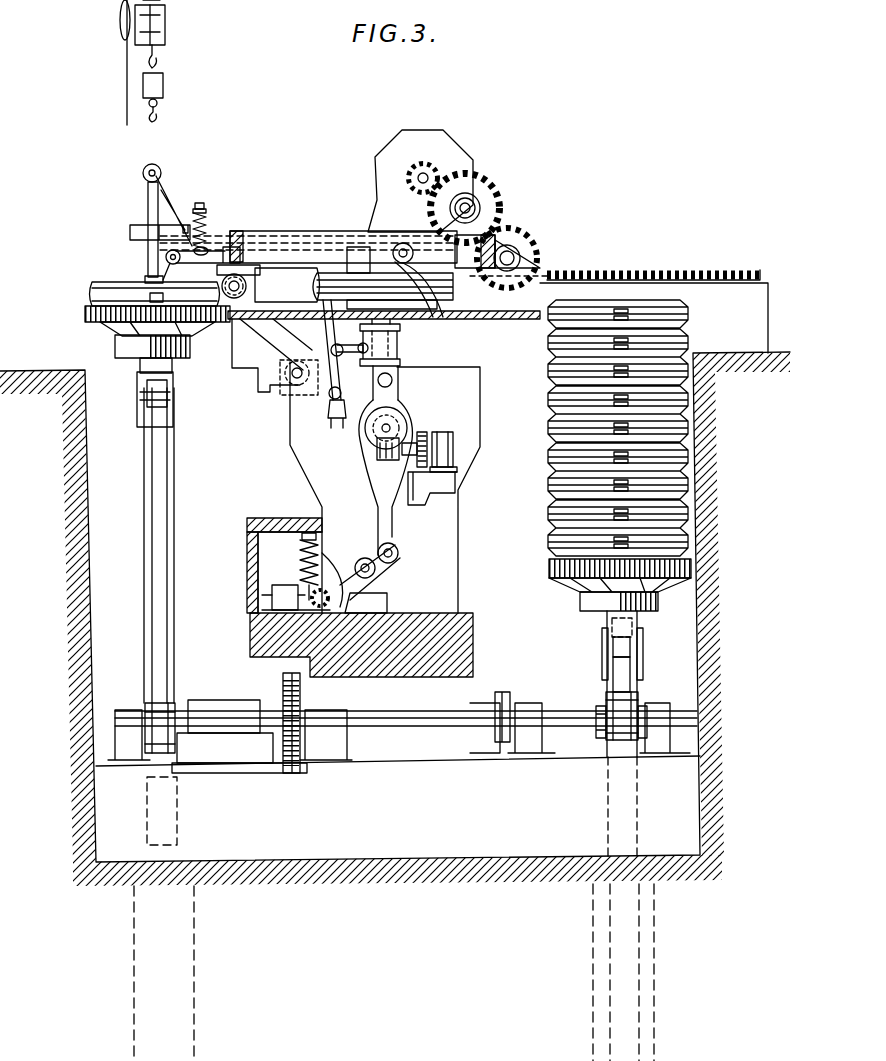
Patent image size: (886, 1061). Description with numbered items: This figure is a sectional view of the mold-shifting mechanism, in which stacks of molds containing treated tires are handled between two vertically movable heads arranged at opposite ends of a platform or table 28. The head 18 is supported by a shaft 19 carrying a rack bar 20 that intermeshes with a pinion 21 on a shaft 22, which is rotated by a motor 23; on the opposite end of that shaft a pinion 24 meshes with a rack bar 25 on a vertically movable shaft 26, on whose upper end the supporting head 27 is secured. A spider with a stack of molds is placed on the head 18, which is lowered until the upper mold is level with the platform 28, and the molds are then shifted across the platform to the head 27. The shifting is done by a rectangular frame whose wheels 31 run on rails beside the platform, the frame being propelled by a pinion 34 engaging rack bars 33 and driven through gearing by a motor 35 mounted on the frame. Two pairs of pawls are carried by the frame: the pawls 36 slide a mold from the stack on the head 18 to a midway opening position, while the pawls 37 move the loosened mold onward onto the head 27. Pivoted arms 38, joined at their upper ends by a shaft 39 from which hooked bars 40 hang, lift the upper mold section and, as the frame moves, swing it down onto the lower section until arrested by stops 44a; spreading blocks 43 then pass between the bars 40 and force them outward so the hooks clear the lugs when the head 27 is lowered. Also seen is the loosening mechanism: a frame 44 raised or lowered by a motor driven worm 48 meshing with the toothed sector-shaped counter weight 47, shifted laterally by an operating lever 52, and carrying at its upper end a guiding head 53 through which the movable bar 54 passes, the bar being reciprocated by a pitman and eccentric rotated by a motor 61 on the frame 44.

The vertically movable head 18 is at (560, 580).
The shaft 19 is at (608, 617).
The rack bar 20 is at (623, 684).
The pinion 21 is at (623, 708).
The shaft 22 is at (470, 726).
The motor 23 is at (233, 706).
The pinion 24 is at (160, 717).
The rack bar 25 is at (162, 626).
The vertically movable shaft 26 is at (173, 511).
The supporting head 27 is at (87, 326).
The platform 28 is at (286, 319).
The wheels 31 is at (254, 283).
The rack bars 33 is at (658, 271).
The pinion 34 is at (527, 257).
The motor 35 is at (453, 148).
The pawls 36 is at (414, 272).
The pawls 37 is at (160, 272).
The arms 38 is at (184, 199).
The shaft 39 is at (160, 166).
The bars 40 is at (150, 215).
The spreading blocks 43 is at (130, 237).
The frame 44 is at (378, 495).
The stops 44a is at (232, 353).
The counter weight 47 is at (322, 559).
The motor driven worm 48 is at (301, 567).
The operating lever 52 is at (329, 335).
The guiding head 53 is at (400, 347).
The movable bar 54 is at (394, 369).
The motor 61 is at (436, 437).